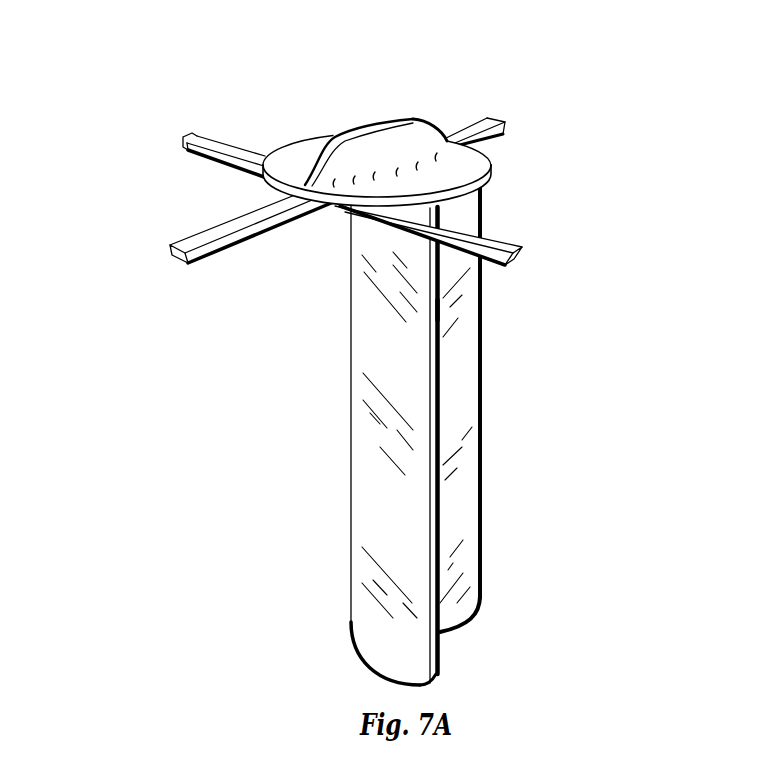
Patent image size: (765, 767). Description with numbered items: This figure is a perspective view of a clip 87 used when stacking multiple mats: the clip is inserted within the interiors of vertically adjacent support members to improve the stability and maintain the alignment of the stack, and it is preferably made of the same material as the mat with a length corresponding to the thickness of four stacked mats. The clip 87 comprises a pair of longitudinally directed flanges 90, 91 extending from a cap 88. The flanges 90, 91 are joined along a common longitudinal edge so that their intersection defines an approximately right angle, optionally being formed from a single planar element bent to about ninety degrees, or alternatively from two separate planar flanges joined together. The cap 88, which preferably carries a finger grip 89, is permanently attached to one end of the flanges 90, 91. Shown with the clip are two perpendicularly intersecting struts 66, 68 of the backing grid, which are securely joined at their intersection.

The strut 66 is at (213, 140).
The strut 68 is at (228, 227).
The clip 87 is at (376, 356).
The cap 88 is at (437, 177).
The finger grip 89 is at (417, 138).
The flange 90 is at (430, 408).
The flange 91 is at (465, 510).